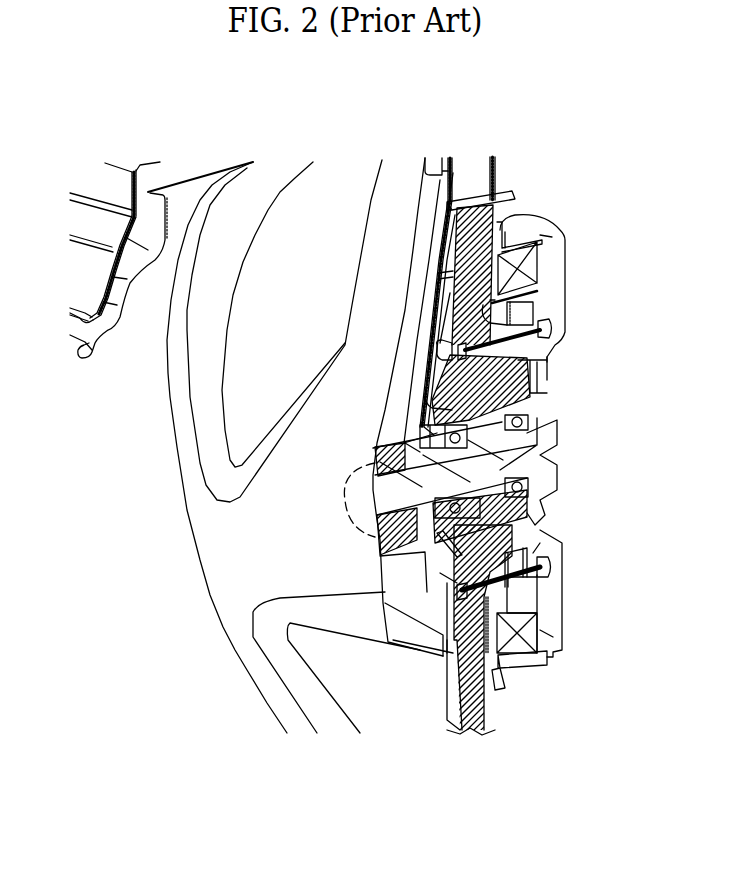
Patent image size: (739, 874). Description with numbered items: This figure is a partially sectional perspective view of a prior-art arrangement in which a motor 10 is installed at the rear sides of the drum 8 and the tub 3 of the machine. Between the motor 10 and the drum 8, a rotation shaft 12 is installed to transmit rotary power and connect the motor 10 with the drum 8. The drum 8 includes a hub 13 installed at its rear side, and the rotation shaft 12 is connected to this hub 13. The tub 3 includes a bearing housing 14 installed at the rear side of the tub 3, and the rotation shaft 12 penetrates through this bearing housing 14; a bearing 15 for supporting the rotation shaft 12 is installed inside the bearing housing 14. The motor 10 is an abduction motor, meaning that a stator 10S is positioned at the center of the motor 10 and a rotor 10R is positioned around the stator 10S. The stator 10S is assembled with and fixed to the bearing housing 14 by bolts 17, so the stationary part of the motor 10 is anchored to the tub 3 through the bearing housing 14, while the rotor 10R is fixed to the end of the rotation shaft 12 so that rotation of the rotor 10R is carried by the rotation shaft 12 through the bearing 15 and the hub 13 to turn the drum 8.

The tub 3 is at (490, 705).
The drum 8 is at (450, 727).
The motor 10 is at (570, 288).
The rotor 10R is at (547, 240).
The stator 10S is at (542, 292).
The rotation shaft 12 is at (520, 450).
The hub 13 is at (457, 168).
The bearing housing 14 is at (520, 391).
The bearing 15 is at (520, 520).
The bolts 17 is at (549, 328).